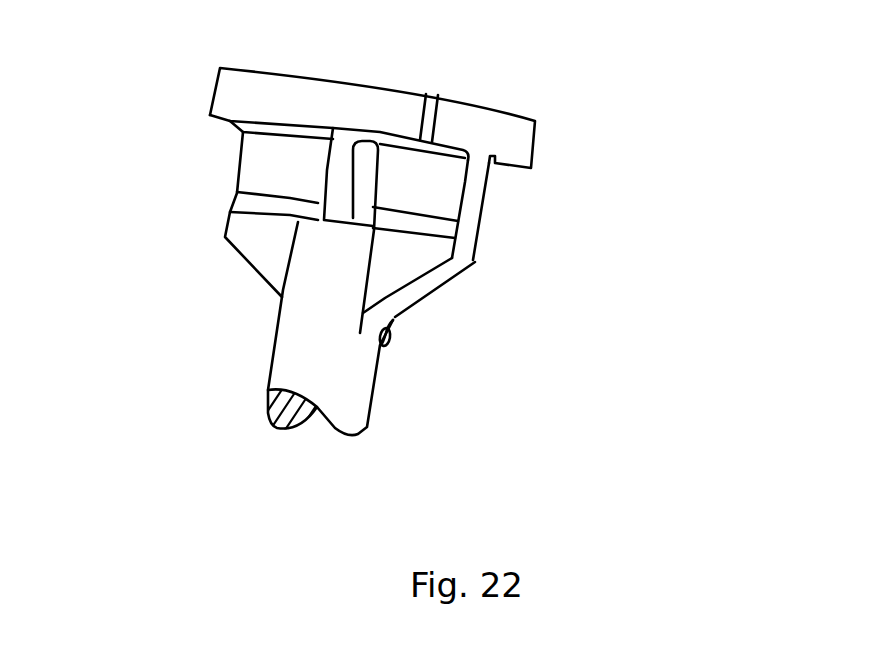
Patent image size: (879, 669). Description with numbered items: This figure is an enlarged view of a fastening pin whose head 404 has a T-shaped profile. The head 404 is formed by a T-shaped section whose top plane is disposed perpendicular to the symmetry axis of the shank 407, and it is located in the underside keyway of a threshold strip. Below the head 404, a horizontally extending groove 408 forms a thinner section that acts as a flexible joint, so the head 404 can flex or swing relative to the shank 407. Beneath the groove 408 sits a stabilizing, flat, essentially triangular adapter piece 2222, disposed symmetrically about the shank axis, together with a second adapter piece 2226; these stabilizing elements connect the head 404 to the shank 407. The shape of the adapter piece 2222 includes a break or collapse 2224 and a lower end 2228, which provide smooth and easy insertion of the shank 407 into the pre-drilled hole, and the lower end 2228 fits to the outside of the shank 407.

The head 404 is at (475, 132).
The groove 408 is at (432, 223).
The shank 407 is at (318, 358).
The adapter piece 2226 is at (228, 220).
The break 2224 is at (468, 261).
The adapter piece 2222 is at (398, 262).
The lower end 2228 is at (397, 315).